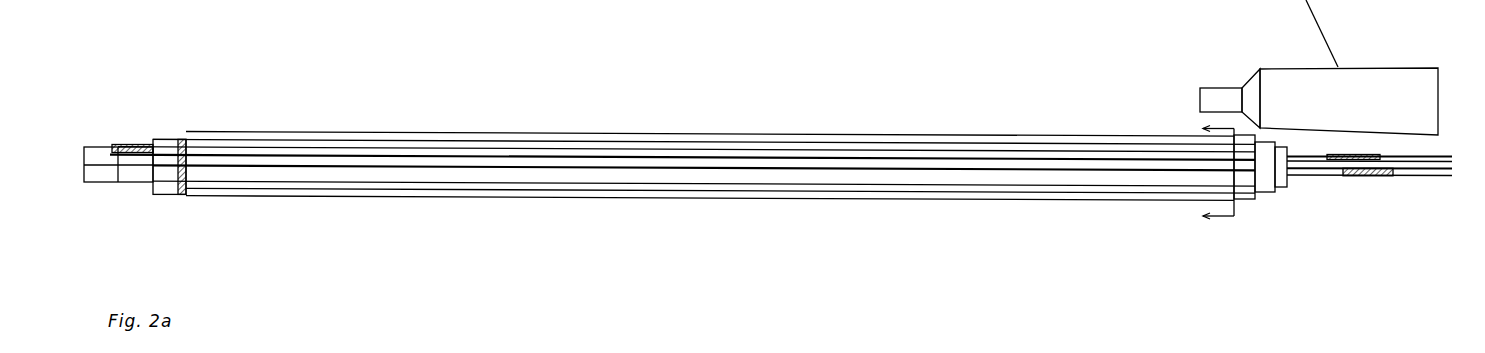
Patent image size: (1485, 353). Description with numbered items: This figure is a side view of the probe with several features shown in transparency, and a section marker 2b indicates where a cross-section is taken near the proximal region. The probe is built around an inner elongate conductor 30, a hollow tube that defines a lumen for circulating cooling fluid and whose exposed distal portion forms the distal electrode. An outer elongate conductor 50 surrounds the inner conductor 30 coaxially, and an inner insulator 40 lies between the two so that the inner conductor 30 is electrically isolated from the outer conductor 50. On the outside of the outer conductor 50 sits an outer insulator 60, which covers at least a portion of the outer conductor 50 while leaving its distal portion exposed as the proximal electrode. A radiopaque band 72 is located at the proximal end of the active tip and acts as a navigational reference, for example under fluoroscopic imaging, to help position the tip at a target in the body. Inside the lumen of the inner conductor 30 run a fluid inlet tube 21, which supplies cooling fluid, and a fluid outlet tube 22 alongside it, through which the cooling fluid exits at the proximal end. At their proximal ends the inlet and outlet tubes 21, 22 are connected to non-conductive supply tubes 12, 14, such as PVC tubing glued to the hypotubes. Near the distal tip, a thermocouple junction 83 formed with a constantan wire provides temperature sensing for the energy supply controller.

The outer insulator 60 is at (704, 189).
The inner insulator 40 is at (669, 191).
The thermocouple junction 83 is at (671, 193).
The inner elongate conductor 30 is at (118, 136).
The fluid outlet tube 22 is at (153, 105).
The outer elongate conductor 50 is at (191, 142).
The radiopaque band 72 is at (190, 196).
The section line 2b is at (1198, 172).
The fluid inlet tube 21 is at (1264, 190).
The supply tube 14 is at (1369, 193).
The supply tube 12 is at (1369, 206).